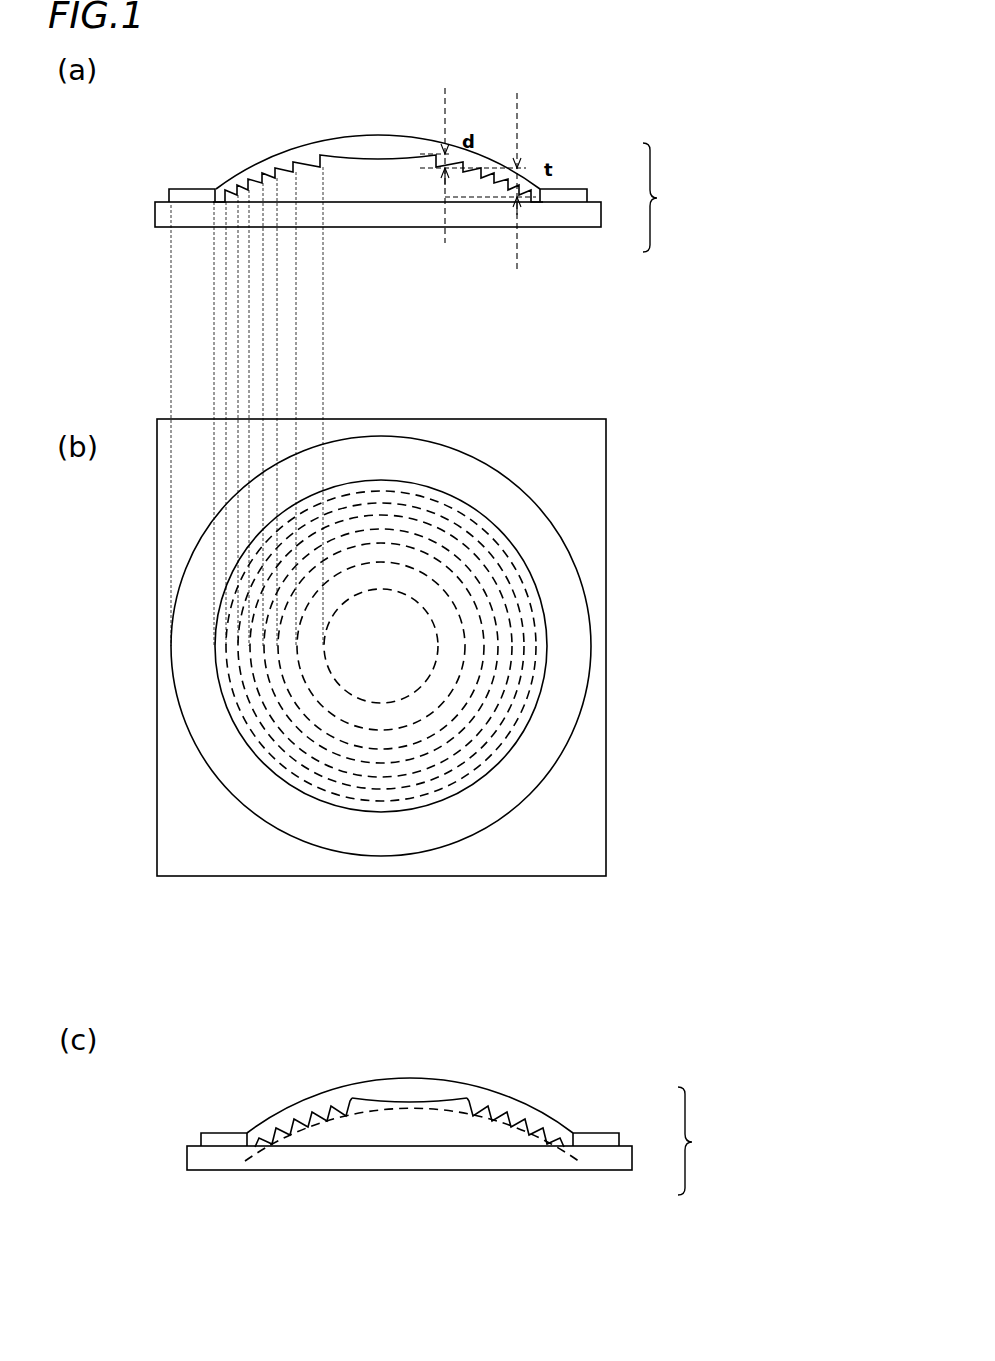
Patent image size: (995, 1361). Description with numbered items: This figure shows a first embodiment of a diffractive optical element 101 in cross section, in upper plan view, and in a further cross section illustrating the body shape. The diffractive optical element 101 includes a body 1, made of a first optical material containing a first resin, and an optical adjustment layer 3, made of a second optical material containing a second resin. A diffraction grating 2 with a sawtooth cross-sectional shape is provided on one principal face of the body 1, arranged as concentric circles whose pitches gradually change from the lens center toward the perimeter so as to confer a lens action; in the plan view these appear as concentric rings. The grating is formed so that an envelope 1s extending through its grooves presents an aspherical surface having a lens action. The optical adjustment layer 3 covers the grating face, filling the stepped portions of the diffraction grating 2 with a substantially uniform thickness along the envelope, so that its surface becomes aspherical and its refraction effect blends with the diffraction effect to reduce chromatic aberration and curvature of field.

The body 1 is at (168, 200).
The diffraction grating 2 is at (320, 165).
The optical adjustment layer 3 is at (340, 147).
The envelope 1s is at (507, 1123).
The diffractive optical element 101 is at (702, 669).